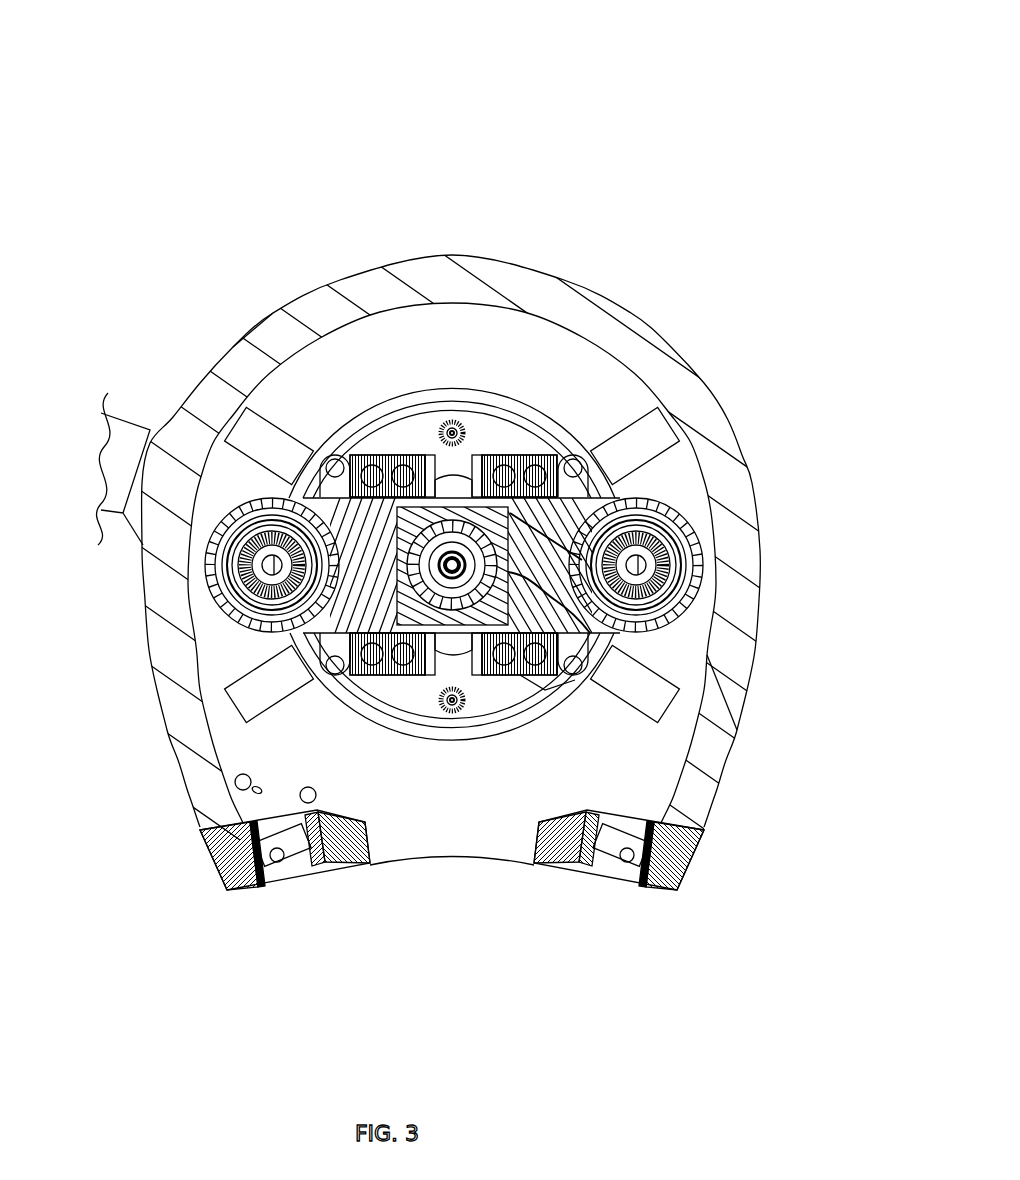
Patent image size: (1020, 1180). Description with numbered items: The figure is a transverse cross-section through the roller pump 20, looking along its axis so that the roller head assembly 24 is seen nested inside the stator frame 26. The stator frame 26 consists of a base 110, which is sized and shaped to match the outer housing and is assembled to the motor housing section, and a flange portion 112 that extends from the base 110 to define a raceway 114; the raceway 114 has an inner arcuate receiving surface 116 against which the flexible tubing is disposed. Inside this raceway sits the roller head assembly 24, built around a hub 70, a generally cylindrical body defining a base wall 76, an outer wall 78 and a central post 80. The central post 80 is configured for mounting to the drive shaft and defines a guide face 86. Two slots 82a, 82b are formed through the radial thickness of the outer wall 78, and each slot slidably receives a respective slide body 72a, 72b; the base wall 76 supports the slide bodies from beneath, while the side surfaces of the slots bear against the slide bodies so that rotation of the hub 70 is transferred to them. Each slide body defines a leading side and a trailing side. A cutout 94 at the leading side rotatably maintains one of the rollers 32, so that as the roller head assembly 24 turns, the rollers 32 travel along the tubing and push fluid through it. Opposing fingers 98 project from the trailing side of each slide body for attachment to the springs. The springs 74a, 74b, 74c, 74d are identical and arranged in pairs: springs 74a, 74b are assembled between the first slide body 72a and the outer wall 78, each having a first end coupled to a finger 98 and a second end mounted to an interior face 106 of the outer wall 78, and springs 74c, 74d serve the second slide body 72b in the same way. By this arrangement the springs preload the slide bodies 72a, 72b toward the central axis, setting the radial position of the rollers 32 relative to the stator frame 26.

The roller pump 20 is at (672, 55).
The roller head assembly 24 is at (580, 417).
The stator frame 26 is at (775, 560).
The roller 32 is at (208, 596).
The hub 70 is at (481, 390).
The first slide body 72a is at (645, 465).
The second slide body 72b is at (318, 683).
The spring 74a is at (514, 455).
The spring 74b is at (530, 680).
The spring 74c is at (393, 455).
The spring 74d is at (393, 676).
The base wall 76 is at (532, 690).
The outer wall 78 is at (457, 742).
The central post 80 is at (483, 388).
The slot 82a is at (575, 457).
The slot 82b is at (322, 476).
The guide face 86 is at (560, 640).
The cutout 94 is at (690, 540).
The fingers 98 is at (563, 405).
The interior face 106 is at (582, 408).
The base 110 is at (414, 327).
The flange portion 112 is at (737, 688).
The raceway 114 is at (283, 400).
The inner arcuate receiving surface 116 is at (328, 336).